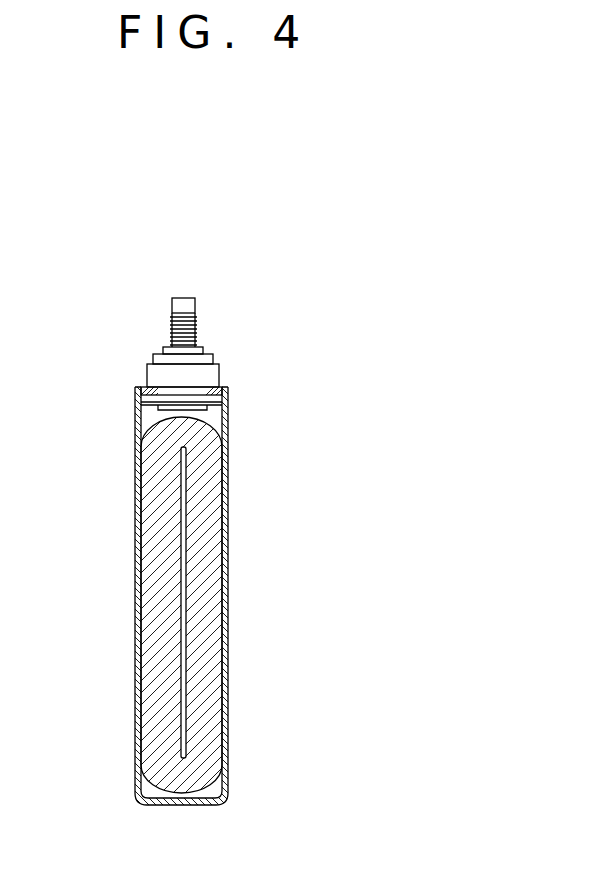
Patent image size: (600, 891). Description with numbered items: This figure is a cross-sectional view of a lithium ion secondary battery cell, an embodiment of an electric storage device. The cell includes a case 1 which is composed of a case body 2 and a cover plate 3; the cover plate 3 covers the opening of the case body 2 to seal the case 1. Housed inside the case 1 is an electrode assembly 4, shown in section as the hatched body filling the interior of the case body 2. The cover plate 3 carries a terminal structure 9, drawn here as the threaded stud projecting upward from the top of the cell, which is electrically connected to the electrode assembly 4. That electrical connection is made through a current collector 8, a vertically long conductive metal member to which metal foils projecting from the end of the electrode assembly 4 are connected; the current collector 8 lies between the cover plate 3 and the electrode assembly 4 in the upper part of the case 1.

The case 1 is at (244, 592).
The case body 2 is at (230, 487).
The cover plate 3 is at (222, 386).
The electrode assembly 4 is at (188, 773).
The current collector 8 is at (152, 412).
The terminal structure 9 is at (227, 331).